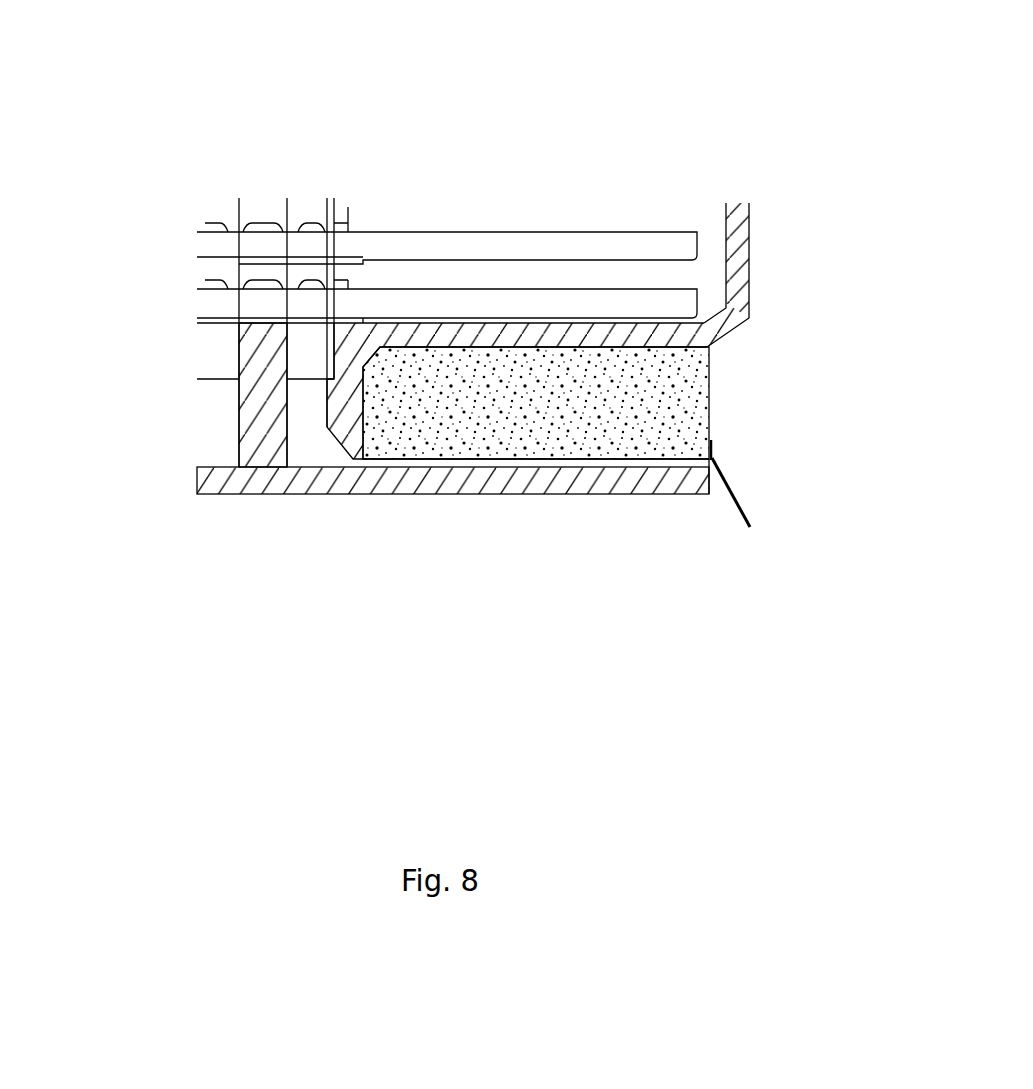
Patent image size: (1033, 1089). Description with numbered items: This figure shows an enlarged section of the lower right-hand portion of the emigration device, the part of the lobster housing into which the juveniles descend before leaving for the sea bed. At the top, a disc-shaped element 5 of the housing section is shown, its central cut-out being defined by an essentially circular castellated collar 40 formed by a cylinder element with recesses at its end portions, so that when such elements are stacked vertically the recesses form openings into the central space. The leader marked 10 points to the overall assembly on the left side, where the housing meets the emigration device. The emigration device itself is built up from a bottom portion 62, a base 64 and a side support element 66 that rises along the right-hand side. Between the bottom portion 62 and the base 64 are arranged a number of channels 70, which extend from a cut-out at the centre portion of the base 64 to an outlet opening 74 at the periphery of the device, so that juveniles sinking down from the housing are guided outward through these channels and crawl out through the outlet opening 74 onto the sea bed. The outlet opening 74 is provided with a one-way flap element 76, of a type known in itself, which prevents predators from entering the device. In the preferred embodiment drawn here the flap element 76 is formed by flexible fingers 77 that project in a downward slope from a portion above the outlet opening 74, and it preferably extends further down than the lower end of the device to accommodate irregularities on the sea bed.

The element 5 is at (603, 243).
The housing 10 is at (217, 353).
The castellated collar 40 is at (265, 228).
The bottom portion 62 is at (198, 493).
The base 64 is at (430, 407).
The side support element 66 is at (745, 233).
The channel 70 is at (510, 463).
The outlet opening 74 is at (708, 464).
The one-way flap element 76 is at (737, 453).
The flexible fingers 77 is at (735, 495).